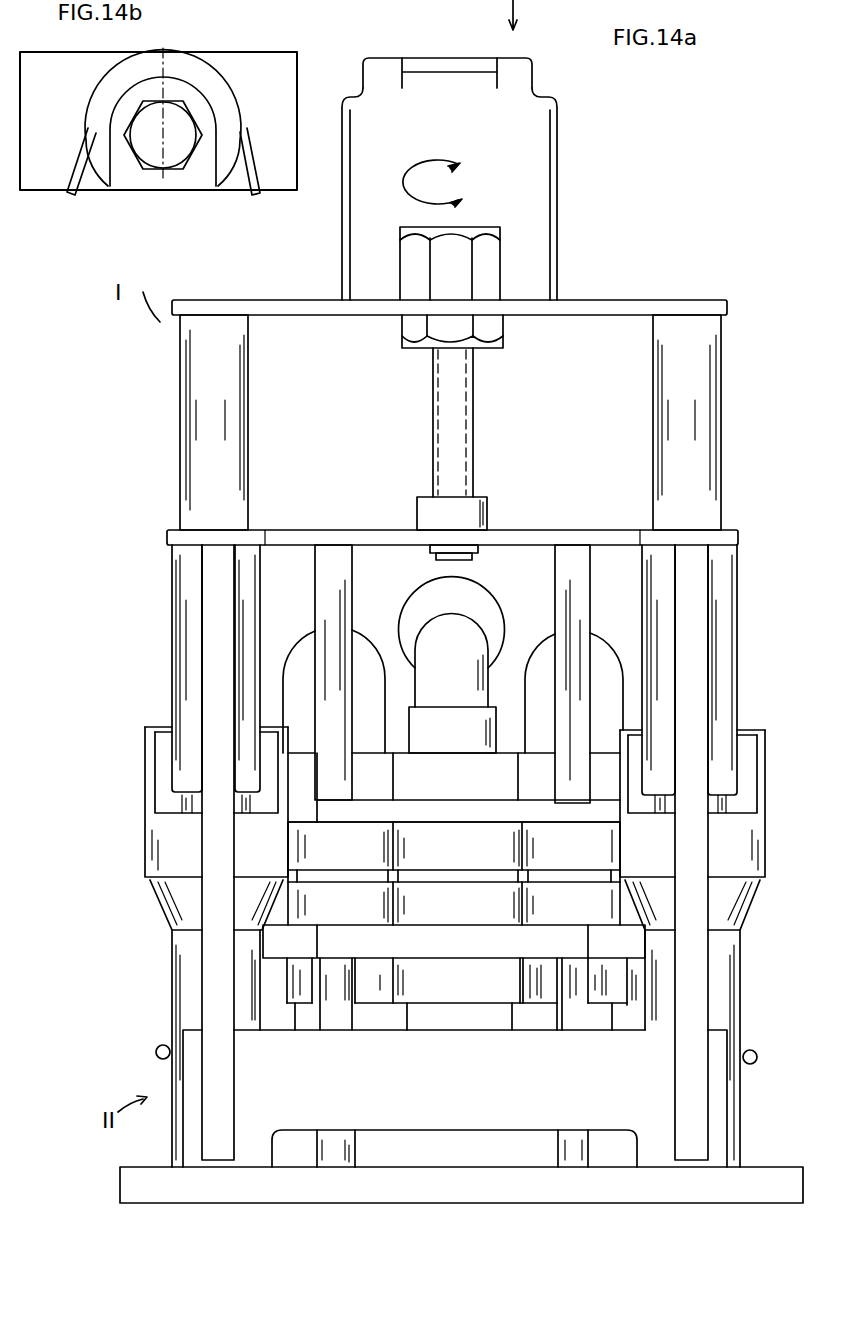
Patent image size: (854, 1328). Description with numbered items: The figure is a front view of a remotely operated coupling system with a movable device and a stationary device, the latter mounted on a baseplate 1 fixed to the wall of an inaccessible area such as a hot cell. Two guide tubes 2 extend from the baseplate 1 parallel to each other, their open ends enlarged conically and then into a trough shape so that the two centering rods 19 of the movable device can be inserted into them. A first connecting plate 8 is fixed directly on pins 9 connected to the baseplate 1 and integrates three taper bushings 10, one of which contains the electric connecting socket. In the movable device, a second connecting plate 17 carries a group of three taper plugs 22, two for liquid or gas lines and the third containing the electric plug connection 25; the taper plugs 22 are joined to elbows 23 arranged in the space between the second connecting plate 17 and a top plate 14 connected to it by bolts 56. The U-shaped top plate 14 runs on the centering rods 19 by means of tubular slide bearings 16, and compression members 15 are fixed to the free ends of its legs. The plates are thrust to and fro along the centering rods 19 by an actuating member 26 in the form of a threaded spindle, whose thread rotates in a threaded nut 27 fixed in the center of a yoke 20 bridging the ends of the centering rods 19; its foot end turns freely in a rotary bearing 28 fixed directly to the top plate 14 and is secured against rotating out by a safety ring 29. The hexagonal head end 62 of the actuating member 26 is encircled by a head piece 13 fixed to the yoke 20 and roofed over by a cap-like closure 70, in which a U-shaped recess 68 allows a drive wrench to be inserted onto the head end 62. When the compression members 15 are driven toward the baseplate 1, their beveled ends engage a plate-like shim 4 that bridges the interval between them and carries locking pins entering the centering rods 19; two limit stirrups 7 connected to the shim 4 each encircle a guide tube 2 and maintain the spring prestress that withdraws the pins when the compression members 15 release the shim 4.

In FIG. 14A, the baseplate 1 is at (777, 1178).
In FIG. 14A, the guide tubes 2 is at (163, 842).
In FIG. 14A, the shim 4 is at (655, 1098).
In FIG. 14A, the limit stirrups 7 is at (156, 1052).
In FIG. 14A, the first connecting plate 8 is at (272, 940).
In FIG. 14A, the pins 9 is at (573, 1005).
In FIG. 14A, the taper bushings 10 is at (454, 903).
In FIG. 14B, the head piece 13 is at (248, 160).
In FIG. 14A, the head piece 13 is at (535, 127).
In FIG. 14A, the top plate 14 is at (730, 537).
In FIG. 14A, the compression members 15 is at (212, 1013).
In FIG. 14A, the slide bearings 16 is at (175, 565).
In FIG. 14A, the second connecting plate 17 is at (537, 812).
In FIG. 14A, the centering rods 19 is at (182, 357).
In FIG. 14B, the yoke 20 is at (292, 92).
In FIG. 14A, the yoke 20 is at (608, 300).
In FIG. 14A, the taper plugs 22 is at (454, 846).
In FIG. 14A, the elbows 23 is at (483, 600).
In FIG. 14A, the electric plug connection 25 is at (457, 852).
In FIG. 14A, the actuating member 26 is at (466, 418).
In FIG. 14A, the threaded nut 27 is at (404, 330).
In FIG. 14A, the bearing 28 is at (420, 510).
In FIG. 14A, the safety ring 29 is at (430, 549).
In FIG. 14A, the bolts 56 is at (572, 558).
In FIG. 14B, the head end 62 is at (168, 150).
In FIG. 14A, the head end 62 is at (408, 250).
In FIG. 14B, the U-shaped recess 68 is at (117, 155).
In FIG. 14A, the U-shaped recess 68 is at (445, 58).
In FIG. 14B, the cap-like closure 70 is at (98, 106).
In FIG. 14A, the cap-like closure 70 is at (520, 58).